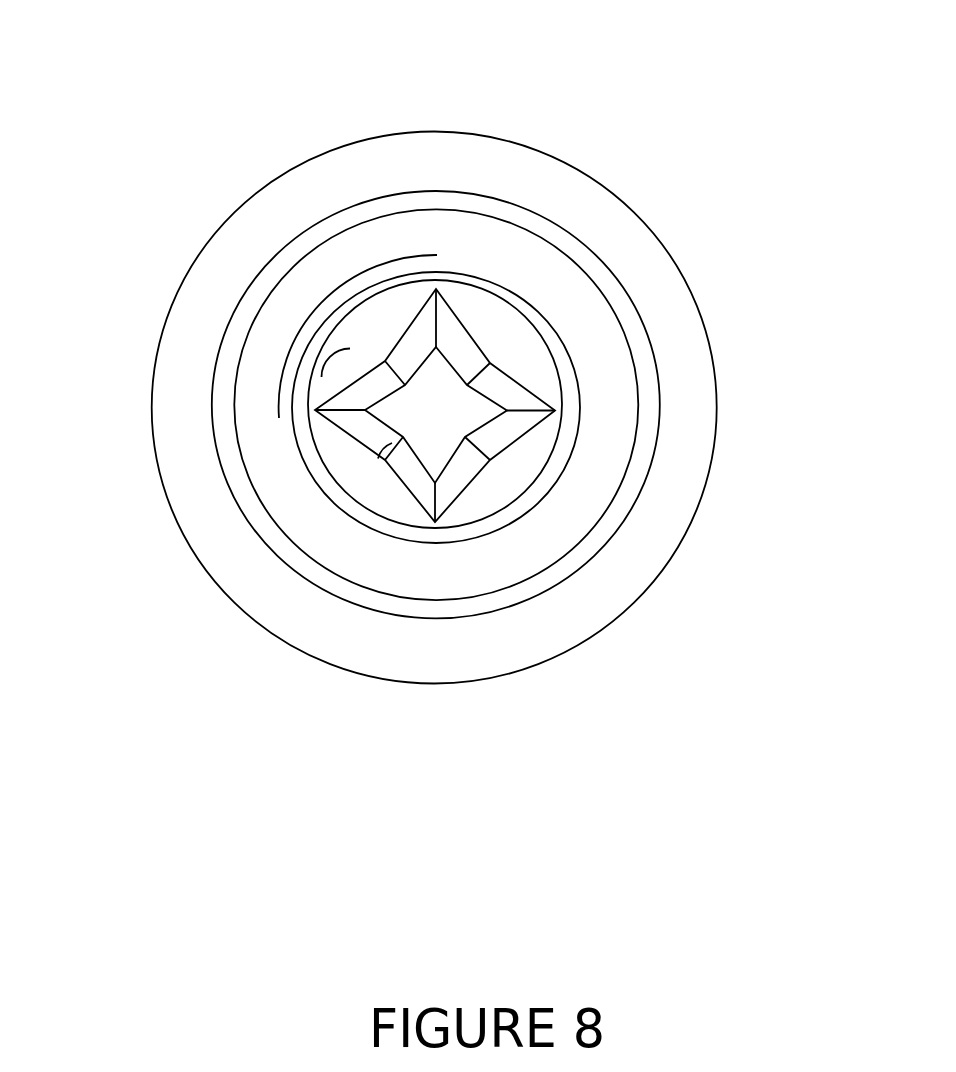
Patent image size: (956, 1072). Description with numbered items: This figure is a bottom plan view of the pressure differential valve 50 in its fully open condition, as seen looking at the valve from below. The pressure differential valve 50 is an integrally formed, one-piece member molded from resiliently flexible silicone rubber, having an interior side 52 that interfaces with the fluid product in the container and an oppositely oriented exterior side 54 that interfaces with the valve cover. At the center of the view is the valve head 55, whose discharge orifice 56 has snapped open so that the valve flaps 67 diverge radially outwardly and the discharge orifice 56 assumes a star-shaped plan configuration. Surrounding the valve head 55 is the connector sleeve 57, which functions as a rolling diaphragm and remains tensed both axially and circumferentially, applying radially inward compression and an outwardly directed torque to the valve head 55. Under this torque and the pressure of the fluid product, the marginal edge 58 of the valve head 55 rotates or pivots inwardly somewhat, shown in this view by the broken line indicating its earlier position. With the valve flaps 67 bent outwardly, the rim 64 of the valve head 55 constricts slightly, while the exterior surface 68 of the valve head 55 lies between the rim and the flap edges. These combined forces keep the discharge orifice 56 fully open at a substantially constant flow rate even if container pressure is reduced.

The pressure differential valve 50 is at (383, 128).
The interior side 52 is at (660, 515).
The exterior side 54 is at (256, 408).
The valve head 55 is at (573, 305).
The discharge orifice 56 is at (452, 416).
The connector sleeve 57 is at (220, 468).
The marginal edge 58 is at (596, 355).
The rim 64 is at (440, 404).
The valve flaps 67 is at (318, 362).
The exterior surface 68 is at (397, 377).